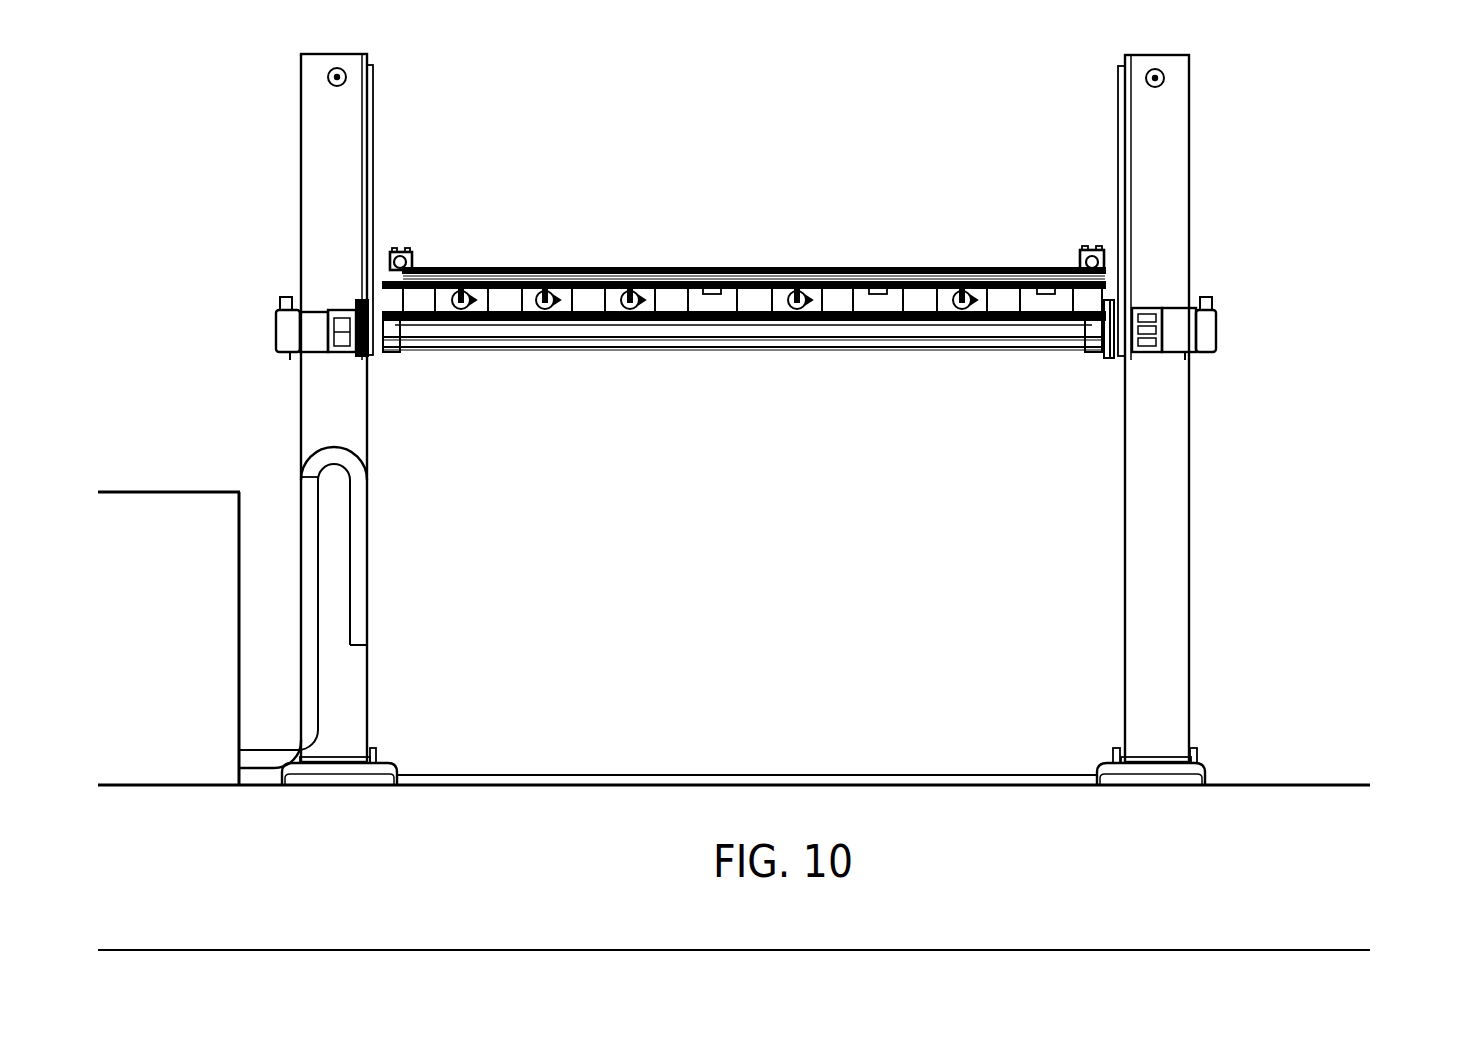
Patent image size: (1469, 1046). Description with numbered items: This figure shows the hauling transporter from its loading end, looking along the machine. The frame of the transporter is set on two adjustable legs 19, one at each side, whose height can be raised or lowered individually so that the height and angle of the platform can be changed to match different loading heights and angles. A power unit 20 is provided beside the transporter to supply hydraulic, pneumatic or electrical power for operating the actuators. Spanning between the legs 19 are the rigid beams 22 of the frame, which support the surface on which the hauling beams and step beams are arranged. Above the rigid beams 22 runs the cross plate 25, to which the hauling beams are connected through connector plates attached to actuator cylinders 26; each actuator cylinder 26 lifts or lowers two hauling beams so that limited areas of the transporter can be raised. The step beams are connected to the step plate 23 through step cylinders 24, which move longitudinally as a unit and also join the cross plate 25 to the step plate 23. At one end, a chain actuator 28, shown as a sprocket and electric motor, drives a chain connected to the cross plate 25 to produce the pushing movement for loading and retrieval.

The adjustable legs 19 is at (1180, 492).
The power unit 20 is at (186, 507).
The rigid beams 22 is at (922, 304).
The step plate 23 is at (1042, 270).
The step cylinders 24 is at (399, 257).
The cross plate 25 is at (496, 272).
The actuator cylinders 26 is at (458, 306).
The chain actuator 28 is at (1214, 330).